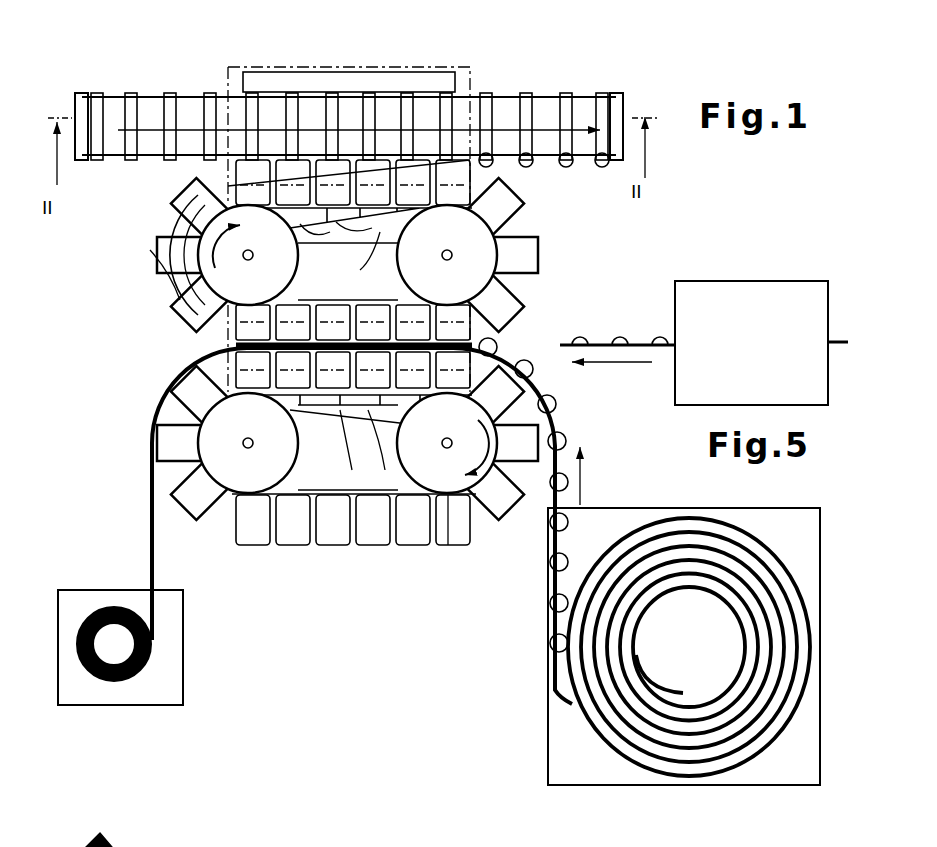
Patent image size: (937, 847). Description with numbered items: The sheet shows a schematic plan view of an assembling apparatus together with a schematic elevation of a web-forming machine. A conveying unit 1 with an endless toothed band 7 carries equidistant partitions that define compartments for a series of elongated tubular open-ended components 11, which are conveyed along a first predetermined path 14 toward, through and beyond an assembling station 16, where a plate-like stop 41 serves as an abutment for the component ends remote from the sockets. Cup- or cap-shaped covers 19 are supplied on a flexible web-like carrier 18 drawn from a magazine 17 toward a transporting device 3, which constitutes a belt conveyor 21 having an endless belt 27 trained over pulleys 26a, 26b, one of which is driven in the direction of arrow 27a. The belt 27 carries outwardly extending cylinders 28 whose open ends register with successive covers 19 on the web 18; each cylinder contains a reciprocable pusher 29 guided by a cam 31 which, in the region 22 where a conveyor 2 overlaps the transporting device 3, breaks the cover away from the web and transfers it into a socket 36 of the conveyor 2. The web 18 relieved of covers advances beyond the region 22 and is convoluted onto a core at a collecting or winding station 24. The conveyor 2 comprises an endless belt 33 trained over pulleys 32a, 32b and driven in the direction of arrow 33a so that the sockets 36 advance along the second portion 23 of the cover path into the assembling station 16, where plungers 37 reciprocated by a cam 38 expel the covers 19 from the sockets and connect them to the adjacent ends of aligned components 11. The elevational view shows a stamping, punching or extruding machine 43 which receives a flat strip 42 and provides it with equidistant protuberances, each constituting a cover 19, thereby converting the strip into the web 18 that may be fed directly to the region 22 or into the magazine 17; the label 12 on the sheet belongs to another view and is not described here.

In FIG. 1, the conveying unit 1 is at (158, 86).
In FIG. 1, the conveyor 2 is at (120, 270).
In FIG. 1, the transporting device 3 is at (452, 608).
In FIG. 1, the endless band or belt 7 is at (507, 102).
In FIG. 1, the first or main components 11 is at (242, 93).
In FIG. 1, the workpiece 12 is at (242, 846).
In FIG. 1, the first predetermined path 14 is at (539, 127).
In FIG. 1, the assembling station 16 is at (472, 78).
In FIG. 1, the magazine 17 is at (548, 728).
In FIG. 1, the web-like carrier 18 is at (150, 557).
In FIG. 5, the web-like carrier 18 is at (656, 350).
In FIG. 1, the second components (covers) 19 is at (551, 564).
In FIG. 5, the second components (covers) 19 is at (660, 338).
In FIG. 1, the belt or band conveyor 21 is at (338, 578).
In FIG. 1, the region of overlap 22 is at (236, 347).
In FIG. 1, the second portion of the second path 23 is at (182, 292).
In FIG. 1, the collecting or winding station 24 is at (168, 660).
In FIG. 1, the pulley 26a is at (447, 440).
In FIG. 1, the pulley 26b is at (247, 440).
In FIG. 1, the endless conveyor band or belt 27 is at (386, 546).
In FIG. 1, the direction of belt advancement 27a is at (446, 546).
In FIG. 1, the cylinders 28 is at (162, 448).
In FIG. 1, the pushers or plungers 29 is at (396, 432).
In FIG. 1, the cam 31 is at (332, 440).
In FIG. 1, the pulley 32a is at (253, 253).
In FIG. 1, the pulley 32b is at (448, 253).
In FIG. 1, the endless belt or band 33 is at (380, 304).
In FIG. 1, the direction of conveyor belt advancement 33a is at (180, 236).
In FIG. 1, the sockets 36 is at (186, 318).
In FIG. 1, the plungers 37 is at (338, 214).
In FIG. 1, the cam 38 is at (375, 232).
In FIG. 1, the plate-like stop 41 is at (352, 81).
In FIG. 5, the flat strip 42 is at (834, 340).
In FIG. 5, the machine 43 is at (722, 292).